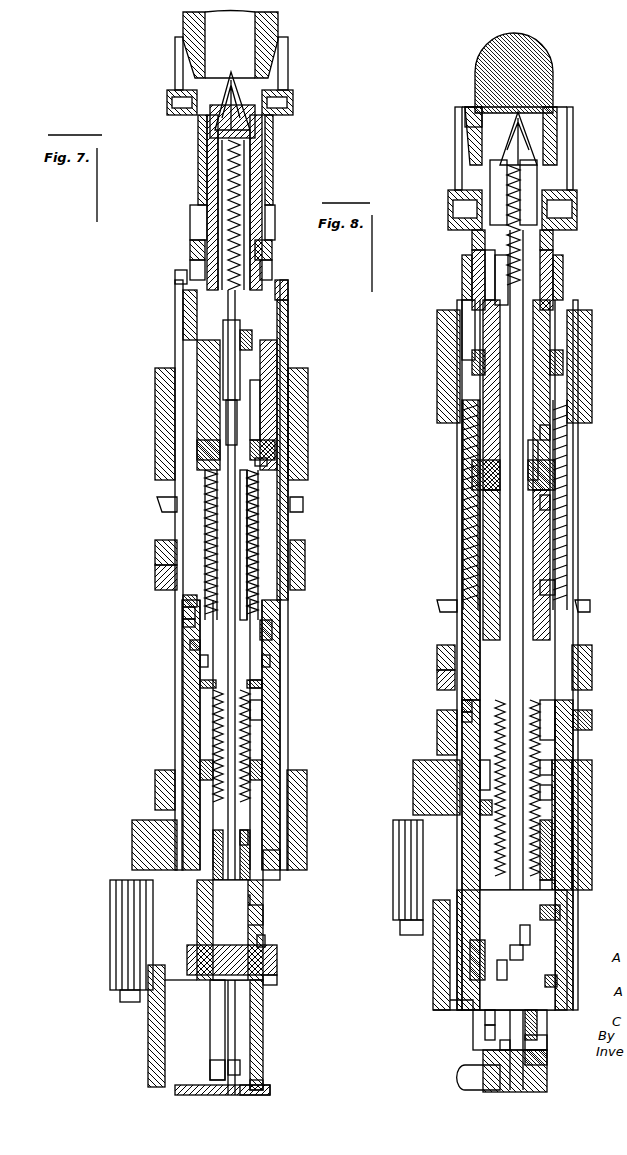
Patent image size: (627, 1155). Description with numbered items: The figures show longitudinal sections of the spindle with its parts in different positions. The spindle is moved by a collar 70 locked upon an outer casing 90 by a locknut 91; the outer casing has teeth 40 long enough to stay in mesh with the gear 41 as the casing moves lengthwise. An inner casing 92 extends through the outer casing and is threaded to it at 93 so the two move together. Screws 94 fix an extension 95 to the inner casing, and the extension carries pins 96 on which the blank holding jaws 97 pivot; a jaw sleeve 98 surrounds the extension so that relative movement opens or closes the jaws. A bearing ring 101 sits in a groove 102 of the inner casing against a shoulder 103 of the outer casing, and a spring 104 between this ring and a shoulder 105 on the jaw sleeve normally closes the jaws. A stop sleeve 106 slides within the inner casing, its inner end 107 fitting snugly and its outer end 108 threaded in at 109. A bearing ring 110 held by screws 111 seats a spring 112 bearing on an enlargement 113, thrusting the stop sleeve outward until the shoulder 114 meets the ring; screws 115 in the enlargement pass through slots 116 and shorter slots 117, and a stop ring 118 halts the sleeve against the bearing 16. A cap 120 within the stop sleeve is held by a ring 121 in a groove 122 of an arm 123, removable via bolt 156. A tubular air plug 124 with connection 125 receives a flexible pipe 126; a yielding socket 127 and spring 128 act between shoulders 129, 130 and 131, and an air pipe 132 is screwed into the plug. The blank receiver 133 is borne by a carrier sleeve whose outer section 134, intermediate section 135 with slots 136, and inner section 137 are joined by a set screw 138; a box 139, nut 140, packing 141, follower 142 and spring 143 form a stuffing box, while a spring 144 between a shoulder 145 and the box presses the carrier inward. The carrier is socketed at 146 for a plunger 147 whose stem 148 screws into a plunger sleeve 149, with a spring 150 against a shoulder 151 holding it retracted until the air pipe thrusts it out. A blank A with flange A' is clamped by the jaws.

In FIG. 8, the blank A is at (526, 73).
In FIG. 8, the flange A' is at (458, 90).
In FIG. 7, the bearing 16 is at (160, 425).
In FIG. 8, the bearing 16 is at (585, 392).
In FIG. 7, the teeth 40 is at (182, 720).
In FIG. 8, the teeth 40 is at (470, 745).
In FIG. 7, the gear 41 is at (133, 830).
In FIG. 8, the gear 41 is at (414, 790).
In FIG. 7, the collar 70 is at (160, 504).
In FIG. 8, the collar 70 is at (440, 606).
In FIG. 7, the outer casing 90 is at (157, 548).
In FIG. 8, the outer casing 90 is at (450, 645).
In FIG. 7, the locknut 91 is at (157, 575).
In FIG. 8, the locknut 91 is at (440, 680).
In FIG. 7, the inner casing 92 is at (190, 645).
In FIG. 8, the inner casing 92 is at (478, 765).
In FIG. 7, the threaded connection 93 is at (248, 852).
In FIG. 8, the threaded connection 93 is at (472, 960).
In FIG. 7, the screws 94 is at (272, 250).
In FIG. 8, the screws 94 is at (470, 360).
In FIG. 7, the extension 95 is at (262, 170).
In FIG. 8, the extension 95 is at (475, 285).
In FIG. 7, the pins 96 is at (293, 103).
In FIG. 8, the pins 96 is at (462, 205).
In FIG. 7, the blank holding jaws 97 is at (288, 58).
In FIG. 8, the blank holding jaws 97 is at (457, 145).
In FIG. 7, the jaw sleeve 98 is at (276, 210).
In FIG. 8, the jaw sleeve 98 is at (465, 262).
In FIG. 7, the bearing ring 101 is at (183, 612).
In FIG. 8, the bearing ring 101 is at (440, 720).
In FIG. 7, the groove 102 is at (183, 600).
In FIG. 8, the groove 102 is at (462, 705).
In FIG. 7, the shoulder 103 is at (185, 622).
In FIG. 8, the shoulder 103 is at (462, 718).
In FIG. 7, the spring 104 is at (280, 420).
In FIG. 8, the spring 104 is at (465, 475).
In FIG. 7, the shoulder 105 is at (262, 352).
In FIG. 8, the shoulder 105 is at (462, 395).
In FIG. 7, the stop sleeve 106 is at (290, 785).
In FIG. 8, the stop sleeve 106 is at (570, 815).
In FIG. 7, the inner end of stop sleeve 107 is at (270, 920).
In FIG. 8, the inner end of stop sleeve 107 is at (460, 945).
In FIG. 7, the outer end of stop sleeve 108 is at (245, 478).
In FIG. 8, the outer end of stop sleeve 108 is at (555, 748).
In FIG. 7, the threaded joint 109 is at (258, 770).
In FIG. 8, the threaded joint 109 is at (550, 795).
In FIG. 7, the bearing ring 110 is at (258, 682).
In FIG. 7, the screws 111 is at (200, 660).
In FIG. 8, the screws 111 is at (550, 770).
In FIG. 7, the spring 112 is at (262, 630).
In FIG. 8, the spring 112 is at (548, 590).
In FIG. 7, the enlargement 113 is at (262, 462).
In FIG. 8, the enlargement 113 is at (545, 505).
In FIG. 7, the shoulder 114 is at (200, 770).
In FIG. 8, the shoulder 114 is at (480, 808).
In FIG. 7, the screws 115 is at (270, 450).
In FIG. 8, the screws 115 is at (555, 478).
In FIG. 7, the slots 116 is at (277, 375).
In FIG. 8, the slots 116 is at (545, 495).
In FIG. 7, the slots 117 is at (265, 400).
In FIG. 8, the slots 117 is at (540, 450).
In FIG. 7, the stop ring 118 is at (272, 982).
In FIG. 8, the stop ring 118 is at (557, 982).
In FIG. 7, the cap 120 is at (263, 1025).
In FIG. 8, the cap 120 is at (540, 1020).
In FIG. 7, the ring 121 is at (255, 1085).
In FIG. 8, the ring 121 is at (547, 1040).
In FIG. 7, the groove 122 is at (180, 1090).
In FIG. 8, the groove 122 is at (475, 1050).
In FIG. 7, the arm 123 is at (150, 1045).
In FIG. 8, the arm 123 is at (435, 990).
In FIG. 7, the tubular air plug 124 is at (262, 1088).
In FIG. 8, the tubular air plug 124 is at (547, 1055).
In FIG. 8, the connection 125 is at (547, 1080).
In FIG. 8, the flexible pipe 126 is at (457, 1078).
In FIG. 7, the yielding socket 127 is at (262, 910).
In FIG. 8, the yielding socket 127 is at (550, 840).
In FIG. 7, the spring 128 is at (278, 965).
In FIG. 8, the spring 128 is at (560, 912).
In FIG. 7, the shoulder 129 is at (265, 942).
In FIG. 8, the shoulder 129 is at (553, 885).
In FIG. 7, the shoulder 130 is at (240, 1070).
In FIG. 8, the shoulder 130 is at (500, 1045).
In FIG. 7, the shoulder 131 is at (250, 1060).
In FIG. 8, the shoulder 131 is at (487, 1030).
In FIG. 7, the air pipe 132 is at (222, 1015).
In FIG. 8, the air pipe 132 is at (505, 968).
In FIG. 7, the blank receiver 133 is at (268, 30).
In FIG. 8, the blank receiver 133 is at (467, 118).
In FIG. 7, the outer section of carrier sleeve 134 is at (273, 146).
In FIG. 8, the outer section of carrier sleeve 134 is at (480, 233).
In FIG. 7, the intermediate section of carrier sleeve 135 is at (246, 190).
In FIG. 8, the intermediate section of carrier sleeve 135 is at (530, 302).
In FIG. 7, the slots 136 is at (272, 268).
In FIG. 8, the slots 136 is at (555, 355).
In FIG. 7, the inner section of carrier sleeve 137 is at (222, 392).
In FIG. 8, the inner section of carrier sleeve 137 is at (488, 510).
In FIG. 7, the set screw 138 is at (252, 340).
In FIG. 8, the set screw 138 is at (550, 432).
In FIG. 7, the box 139 is at (130, 880).
In FIG. 8, the box 139 is at (530, 935).
In FIG. 7, the nut 140 is at (250, 900).
In FIG. 8, the nut 140 is at (487, 1015).
In FIG. 7, the packing 141 is at (268, 868).
In FIG. 8, the packing 141 is at (525, 950).
In FIG. 7, the follower 142 is at (262, 860).
In FIG. 7, the spring 143 is at (245, 840).
In FIG. 7, the spring 144 is at (245, 738).
In FIG. 8, the spring 144 is at (545, 735).
In FIG. 7, the shoulder 145 is at (200, 686).
In FIG. 8, the shoulder 145 is at (575, 712).
In FIG. 7, the socket 146 is at (252, 100).
In FIG. 8, the socket 146 is at (537, 195).
In FIG. 7, the plunger 147 is at (214, 125).
In FIG. 8, the plunger 147 is at (535, 160).
In FIG. 7, the stem 148 is at (226, 160).
In FIG. 8, the stem 148 is at (520, 185).
In FIG. 7, the plunger sleeve 149 is at (262, 292).
In FIG. 8, the plunger sleeve 149 is at (548, 295).
In FIG. 7, the spring 150 is at (190, 272).
In FIG. 8, the spring 150 is at (552, 268).
In FIG. 7, the shoulder 151 is at (215, 320).
In FIG. 8, the shoulder 151 is at (477, 340).
In FIG. 7, the bolt 156 is at (120, 995).
In FIG. 8, the bolt 156 is at (402, 930).